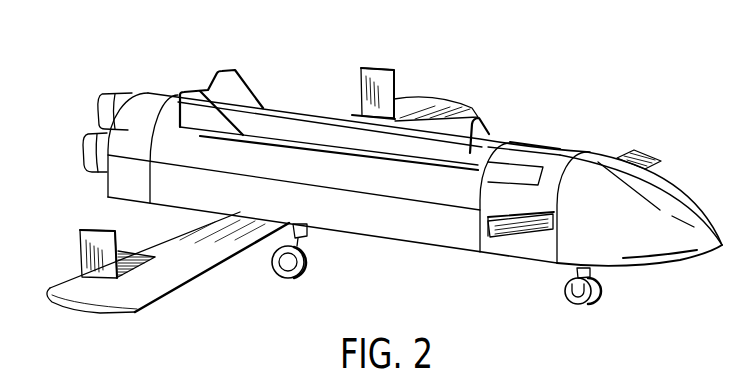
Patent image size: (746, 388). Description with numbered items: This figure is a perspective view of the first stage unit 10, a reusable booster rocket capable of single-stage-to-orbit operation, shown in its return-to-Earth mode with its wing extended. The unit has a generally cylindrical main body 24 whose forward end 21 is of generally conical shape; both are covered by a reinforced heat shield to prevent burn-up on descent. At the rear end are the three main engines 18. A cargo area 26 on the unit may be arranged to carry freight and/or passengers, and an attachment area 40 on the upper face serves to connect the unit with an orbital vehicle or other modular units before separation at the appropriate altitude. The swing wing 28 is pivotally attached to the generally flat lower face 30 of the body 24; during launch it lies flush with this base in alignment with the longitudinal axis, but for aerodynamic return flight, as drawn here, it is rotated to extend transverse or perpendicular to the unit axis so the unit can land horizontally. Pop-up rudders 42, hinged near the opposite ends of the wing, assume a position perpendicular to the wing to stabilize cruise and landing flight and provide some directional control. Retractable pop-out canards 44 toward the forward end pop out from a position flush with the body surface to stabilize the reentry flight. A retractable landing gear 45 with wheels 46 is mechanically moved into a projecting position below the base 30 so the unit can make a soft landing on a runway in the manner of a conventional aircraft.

The first stage unit 10 is at (463, 92).
The main engines 18 is at (100, 103).
The forward end 21 is at (665, 212).
The main body 24 is at (302, 123).
The cargo area 26 is at (543, 147).
The swing wing 28 is at (208, 253).
The lower face 30 is at (427, 244).
The attachment area 40 is at (233, 70).
The pop-up rudders 42 is at (376, 73).
The pop-out canards 44 is at (522, 233).
The retractable landing gear 45 is at (322, 240).
The wheels 46 is at (303, 272).